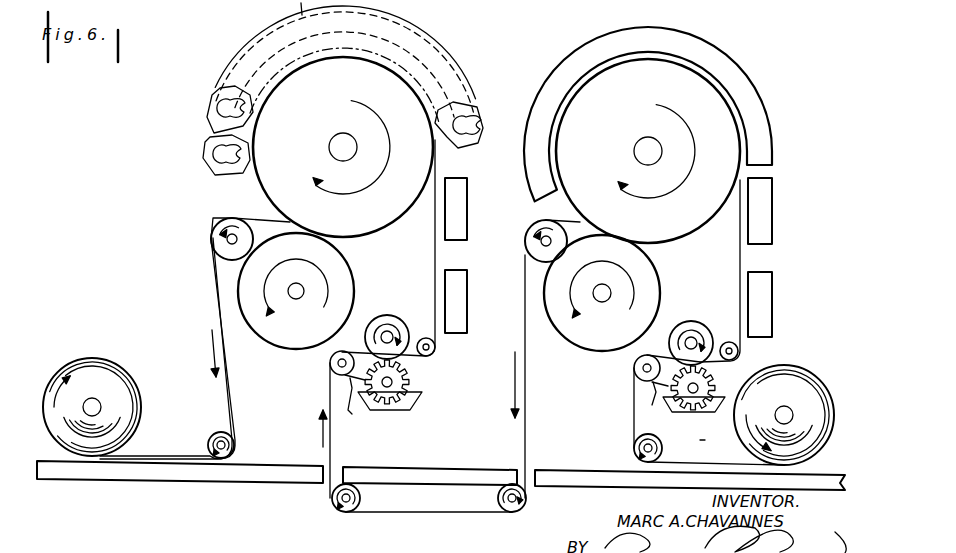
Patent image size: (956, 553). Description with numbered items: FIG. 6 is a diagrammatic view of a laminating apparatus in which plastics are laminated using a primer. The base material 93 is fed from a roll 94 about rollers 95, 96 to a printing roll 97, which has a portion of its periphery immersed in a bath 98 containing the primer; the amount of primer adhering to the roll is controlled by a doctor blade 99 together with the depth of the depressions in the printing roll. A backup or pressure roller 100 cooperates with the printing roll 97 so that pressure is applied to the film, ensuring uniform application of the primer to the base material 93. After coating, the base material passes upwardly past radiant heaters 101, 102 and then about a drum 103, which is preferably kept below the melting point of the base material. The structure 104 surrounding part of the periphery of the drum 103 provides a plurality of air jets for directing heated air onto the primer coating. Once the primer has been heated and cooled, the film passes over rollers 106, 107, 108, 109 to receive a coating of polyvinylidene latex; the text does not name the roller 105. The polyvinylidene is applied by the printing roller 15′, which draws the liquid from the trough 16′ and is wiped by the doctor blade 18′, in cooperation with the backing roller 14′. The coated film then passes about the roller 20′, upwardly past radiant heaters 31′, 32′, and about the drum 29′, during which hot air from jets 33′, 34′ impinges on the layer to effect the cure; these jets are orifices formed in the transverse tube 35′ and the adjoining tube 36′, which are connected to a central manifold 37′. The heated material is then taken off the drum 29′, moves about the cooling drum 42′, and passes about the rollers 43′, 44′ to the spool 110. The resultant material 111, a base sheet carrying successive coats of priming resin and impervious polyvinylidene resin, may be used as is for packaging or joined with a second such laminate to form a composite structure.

The drum 29' is at (343, 147).
The air jets 33' is at (344, 102).
The air jets 34' is at (344, 94).
The tube 36' is at (360, 57).
The central manifold 37' is at (474, 118).
The transverse tube 35' is at (340, 130).
The radiant heater 32' is at (473, 209).
The radiant heater 31' is at (473, 301).
The cooling drum 42' is at (315, 291).
The roller 43' is at (208, 239).
The roller 44' is at (214, 435).
The backing roller 14' is at (387, 321).
The roller 20' is at (418, 329).
The printing roller 15' is at (414, 382).
The trough 16' is at (406, 408).
The doctor blade 18' is at (359, 403).
The roller 109 is at (330, 365).
The roller 108 is at (336, 510).
The roller 107 is at (500, 508).
The spool 110 is at (89, 360).
The resultant material 111 is at (165, 447).
The drum 103 is at (660, 192).
The structure 104 is at (768, 118).
The radiant heater 102 is at (770, 205).
The radiant heater 101 is at (770, 294).
The second pressure roller 105 is at (610, 283).
The roller 106 is at (524, 243).
The backup or pressure roller 100 is at (700, 313).
The printing roll 97 is at (704, 386).
The roller 96 is at (632, 368).
The roller 95 is at (662, 450).
The bath 98 is at (716, 412).
The doctor blade 99 is at (682, 403).
The base material 93 is at (733, 468).
The roll 94 is at (791, 367).